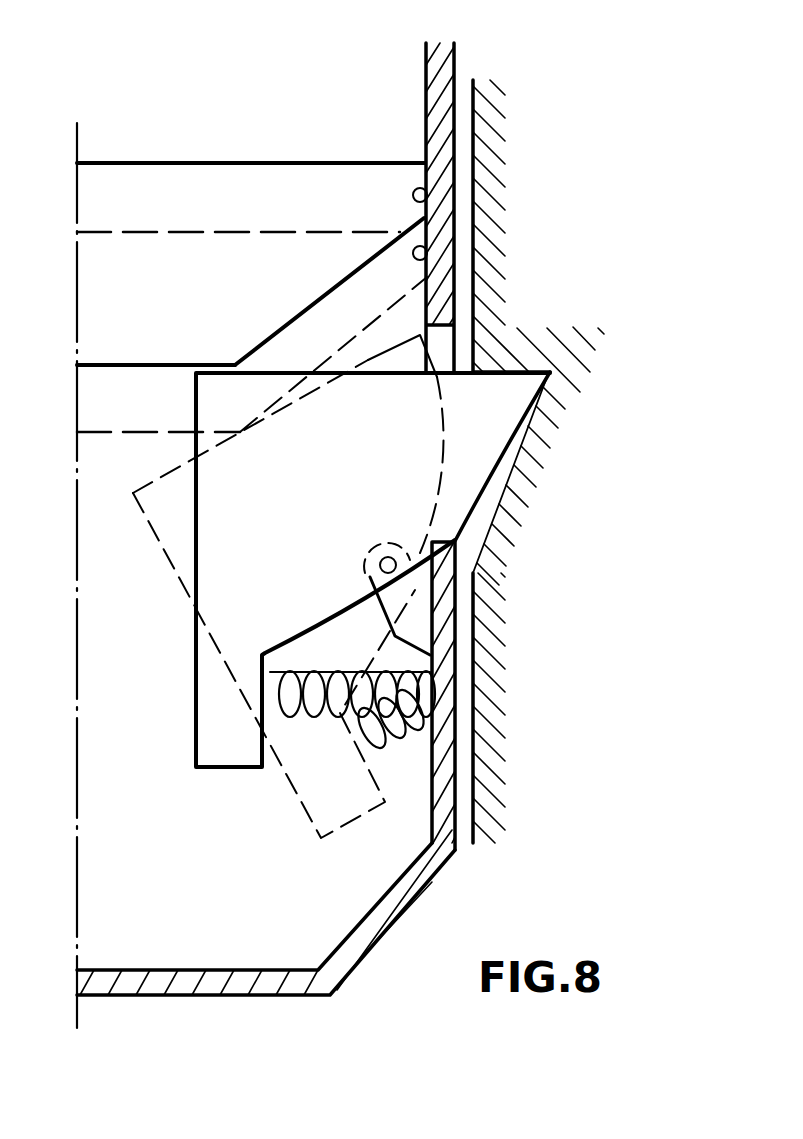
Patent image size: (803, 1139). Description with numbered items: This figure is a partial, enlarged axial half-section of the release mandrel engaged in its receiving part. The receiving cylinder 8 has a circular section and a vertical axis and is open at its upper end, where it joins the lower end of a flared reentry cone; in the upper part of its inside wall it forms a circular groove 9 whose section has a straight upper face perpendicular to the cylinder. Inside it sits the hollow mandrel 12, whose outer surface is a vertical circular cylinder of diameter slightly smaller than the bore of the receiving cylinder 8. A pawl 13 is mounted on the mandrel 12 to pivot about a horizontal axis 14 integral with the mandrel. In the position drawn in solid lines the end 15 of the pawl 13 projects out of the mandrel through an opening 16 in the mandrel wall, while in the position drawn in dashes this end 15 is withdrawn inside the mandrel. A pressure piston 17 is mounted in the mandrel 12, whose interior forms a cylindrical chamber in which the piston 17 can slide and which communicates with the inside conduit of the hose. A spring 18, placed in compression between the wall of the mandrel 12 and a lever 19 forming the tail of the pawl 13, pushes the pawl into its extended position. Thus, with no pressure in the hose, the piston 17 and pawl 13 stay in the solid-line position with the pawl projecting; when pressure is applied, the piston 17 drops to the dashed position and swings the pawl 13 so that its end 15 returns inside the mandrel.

The receiving cylinder 8 is at (492, 232).
The circular groove 9 is at (547, 382).
The hollow mandrel 12 is at (423, 117).
The pawl 13 is at (222, 545).
The horizontal axis 14 is at (370, 573).
The end of pawl 15 is at (527, 453).
The opening 16 is at (440, 553).
The pressure piston 17 is at (157, 183).
The spring 18 is at (318, 720).
The lever 19 is at (220, 740).